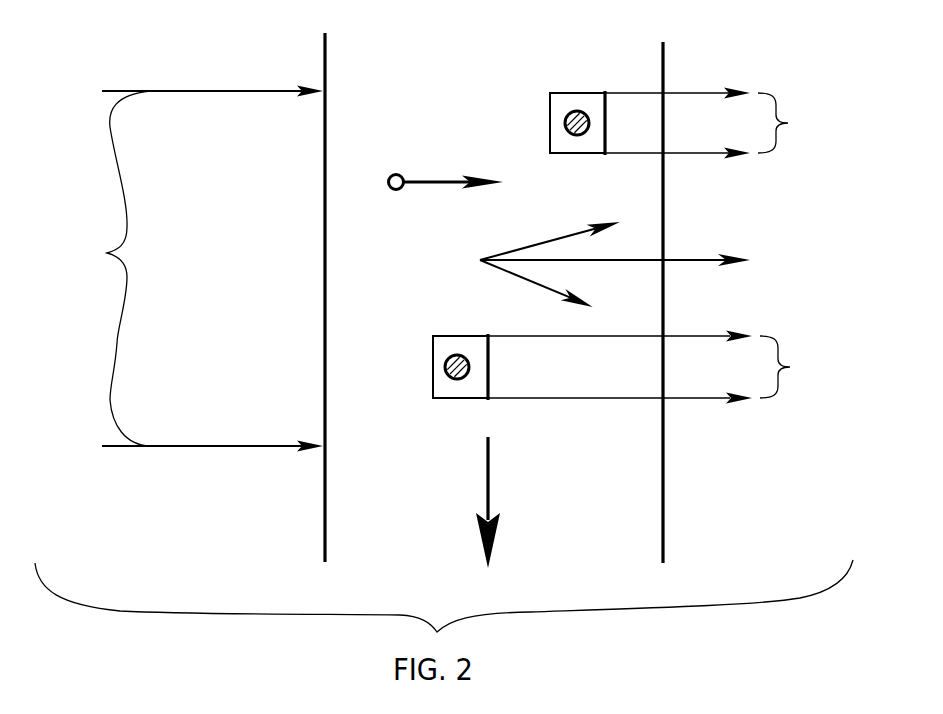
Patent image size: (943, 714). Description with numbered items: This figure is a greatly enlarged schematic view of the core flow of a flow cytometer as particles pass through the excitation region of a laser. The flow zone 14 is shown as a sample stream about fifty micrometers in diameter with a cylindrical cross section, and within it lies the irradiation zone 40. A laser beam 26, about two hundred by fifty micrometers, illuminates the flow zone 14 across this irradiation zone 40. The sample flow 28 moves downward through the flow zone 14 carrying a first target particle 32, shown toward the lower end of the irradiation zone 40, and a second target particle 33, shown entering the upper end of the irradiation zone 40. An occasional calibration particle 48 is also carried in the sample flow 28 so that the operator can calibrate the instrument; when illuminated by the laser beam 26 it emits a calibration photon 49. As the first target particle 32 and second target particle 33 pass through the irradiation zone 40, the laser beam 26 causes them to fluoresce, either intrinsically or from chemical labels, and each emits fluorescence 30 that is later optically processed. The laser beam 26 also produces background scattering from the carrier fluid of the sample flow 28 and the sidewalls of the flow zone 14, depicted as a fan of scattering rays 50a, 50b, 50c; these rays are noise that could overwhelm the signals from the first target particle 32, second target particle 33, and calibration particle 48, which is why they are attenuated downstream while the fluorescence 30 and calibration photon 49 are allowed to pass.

The flow zone 14 is at (666, 228).
The laser beam 26 is at (107, 253).
The sample flow 28 is at (488, 478).
The fluorescence 30 is at (653, 246).
The first target particle 32 is at (470, 369).
The second target particle 33 is at (590, 120).
The irradiation zone 40 is at (360, 265).
The calibration particle 48 is at (396, 172).
The calibration photon 49 is at (430, 180).
The scattering ray 50a is at (573, 232).
The scattering ray 50b is at (700, 258).
The scattering ray 50c is at (537, 285).